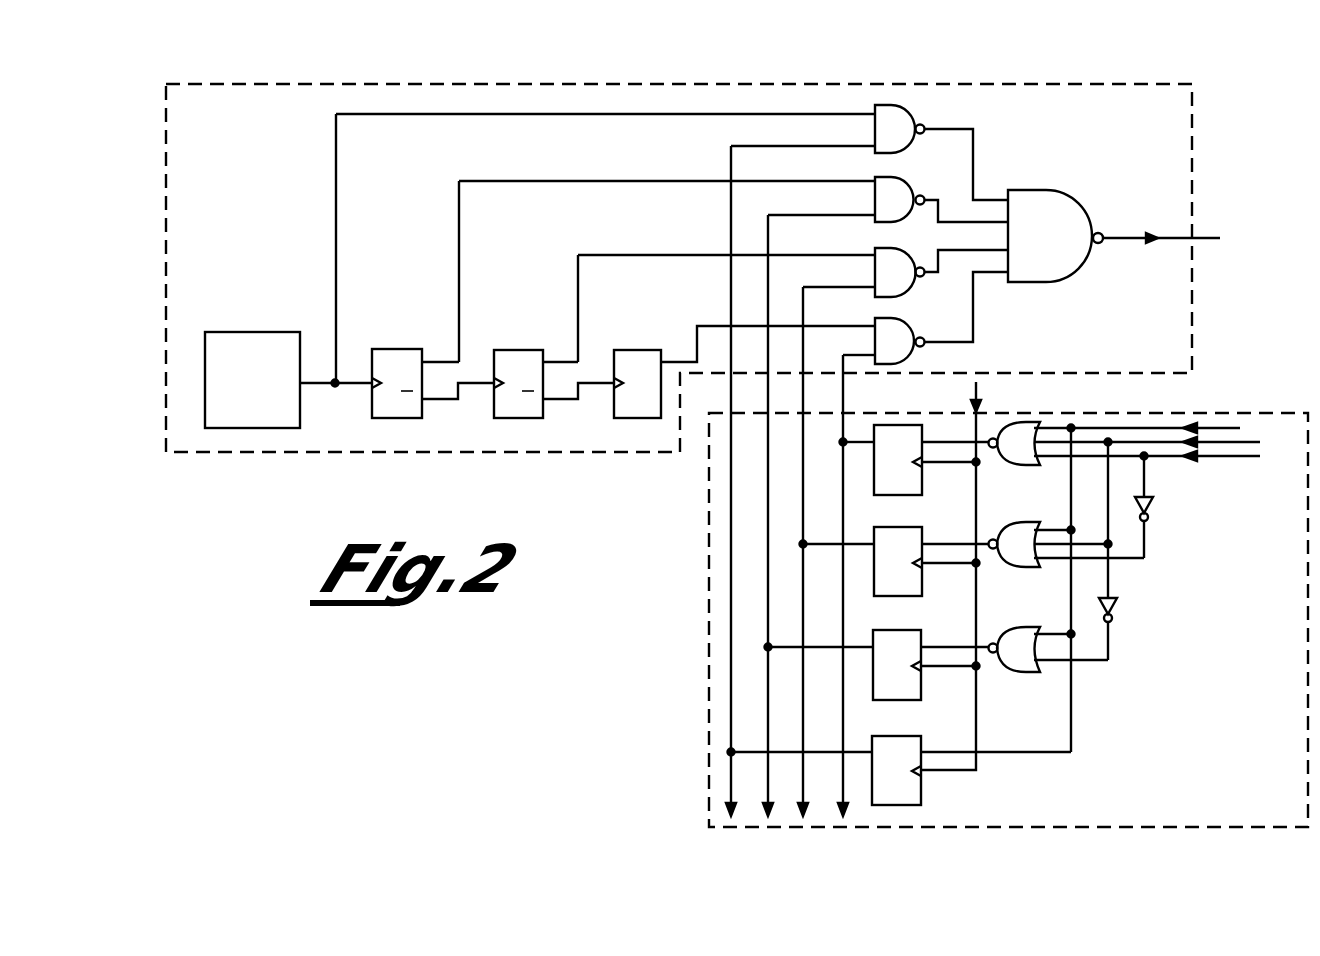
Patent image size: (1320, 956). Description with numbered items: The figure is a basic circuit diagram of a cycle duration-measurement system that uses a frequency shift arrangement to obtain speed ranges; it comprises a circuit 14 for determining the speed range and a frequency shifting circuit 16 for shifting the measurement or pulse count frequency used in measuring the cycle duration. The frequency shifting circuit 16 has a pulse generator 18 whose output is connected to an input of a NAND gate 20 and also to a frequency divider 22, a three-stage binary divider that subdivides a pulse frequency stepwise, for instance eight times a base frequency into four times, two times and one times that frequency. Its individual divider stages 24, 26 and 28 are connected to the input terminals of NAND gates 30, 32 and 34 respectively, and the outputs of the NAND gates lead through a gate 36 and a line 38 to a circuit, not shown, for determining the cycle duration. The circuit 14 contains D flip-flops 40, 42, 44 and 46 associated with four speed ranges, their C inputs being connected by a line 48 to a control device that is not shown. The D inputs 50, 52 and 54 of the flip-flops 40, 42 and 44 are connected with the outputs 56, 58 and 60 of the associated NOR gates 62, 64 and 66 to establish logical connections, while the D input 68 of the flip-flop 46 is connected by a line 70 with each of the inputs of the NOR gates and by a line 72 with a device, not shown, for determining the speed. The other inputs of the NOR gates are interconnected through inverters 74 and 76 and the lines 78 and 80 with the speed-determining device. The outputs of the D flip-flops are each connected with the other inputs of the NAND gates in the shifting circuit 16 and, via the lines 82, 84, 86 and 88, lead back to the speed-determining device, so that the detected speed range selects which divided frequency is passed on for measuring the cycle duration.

The circuit for determining the speed range 14 is at (1258, 413).
The frequency shifting circuit 16 is at (1192, 148).
The pulse generator 18 is at (244, 332).
The NAND gate 20 is at (910, 113).
The frequency divider 22 is at (513, 432).
The divider stage 24 is at (404, 349).
The divider stage 26 is at (522, 350).
The divider stage 28 is at (641, 350).
The NAND gate 30 is at (910, 184).
The NAND gate 32 is at (903, 253).
The NAND gate 34 is at (910, 326).
The gate 36 is at (1068, 203).
The line 38 is at (1205, 239).
The flip-flop 40 is at (893, 495).
The flip-flop 42 is at (893, 596).
The flip-flop 44 is at (892, 700).
The flip-flop 46 is at (915, 805).
The line 48 is at (977, 392).
The D input 50 is at (925, 442).
The D input 52 is at (925, 544).
The D input 54 is at (924, 647).
The output 56 is at (994, 448).
The output 58 is at (994, 549).
The output 60 is at (994, 653).
The NOR gate 62 is at (1036, 465).
The NOR gate 64 is at (1036, 567).
The NOR gate 66 is at (1036, 672).
The D input 68 is at (924, 752).
The line 70 is at (1030, 755).
The line 72 is at (1207, 428).
The inverter 74 is at (1114, 604).
The inverter 76 is at (1150, 503).
The line 78 is at (1262, 442).
The line 80 is at (1262, 457).
The line 82 is at (734, 790).
The line 84 is at (771, 790).
The line 86 is at (806, 790).
The line 88 is at (846, 790).